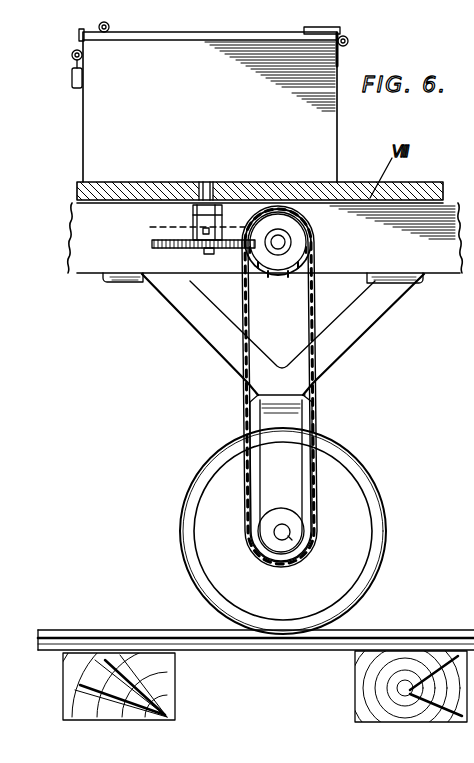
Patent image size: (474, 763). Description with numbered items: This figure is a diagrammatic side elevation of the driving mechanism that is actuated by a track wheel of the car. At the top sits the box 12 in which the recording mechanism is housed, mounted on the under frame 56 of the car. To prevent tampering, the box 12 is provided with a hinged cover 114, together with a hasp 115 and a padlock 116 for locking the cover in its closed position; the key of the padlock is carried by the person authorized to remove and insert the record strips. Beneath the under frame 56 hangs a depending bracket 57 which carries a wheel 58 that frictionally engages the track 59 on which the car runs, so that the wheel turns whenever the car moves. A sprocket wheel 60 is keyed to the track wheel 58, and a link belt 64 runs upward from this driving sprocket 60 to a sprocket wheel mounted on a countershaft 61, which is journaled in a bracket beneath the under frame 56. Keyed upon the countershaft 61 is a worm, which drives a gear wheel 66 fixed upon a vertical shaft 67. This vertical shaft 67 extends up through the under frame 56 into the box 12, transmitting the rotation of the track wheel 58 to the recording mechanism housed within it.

The box 12 is at (320, 140).
The under frame 56 is at (72, 232).
The depending bracket 57 is at (213, 343).
The track wheel 58 is at (182, 530).
The track 59 is at (96, 628).
The sprocket wheel 60 is at (280, 280).
The countershaft 61 is at (285, 243).
The link belt 64 is at (319, 405).
The gear wheel 66 is at (168, 250).
The vertical shaft 67 is at (209, 181).
The hinged cover 114 is at (226, 32).
The hasp 115 is at (80, 33).
The padlock 116 is at (71, 79).